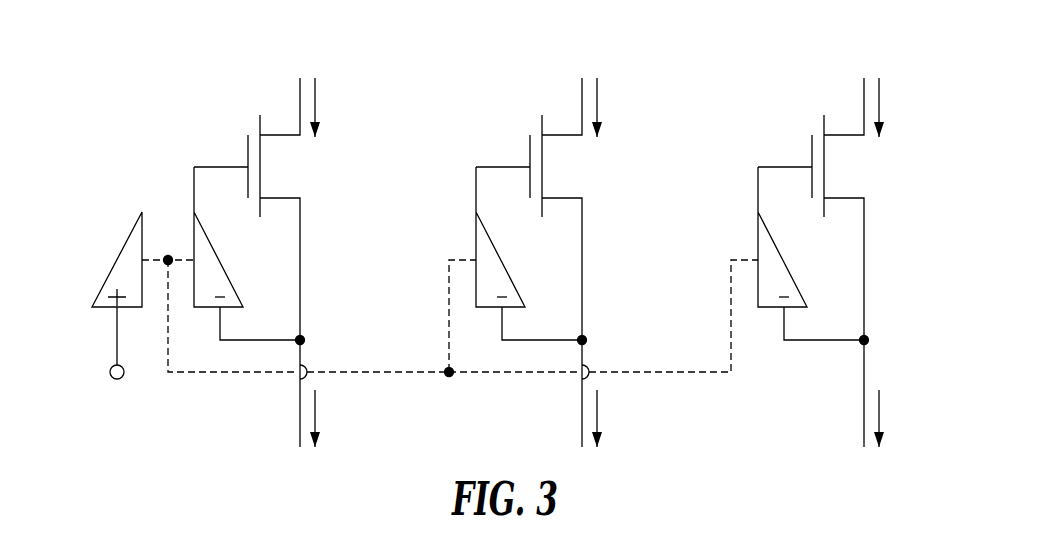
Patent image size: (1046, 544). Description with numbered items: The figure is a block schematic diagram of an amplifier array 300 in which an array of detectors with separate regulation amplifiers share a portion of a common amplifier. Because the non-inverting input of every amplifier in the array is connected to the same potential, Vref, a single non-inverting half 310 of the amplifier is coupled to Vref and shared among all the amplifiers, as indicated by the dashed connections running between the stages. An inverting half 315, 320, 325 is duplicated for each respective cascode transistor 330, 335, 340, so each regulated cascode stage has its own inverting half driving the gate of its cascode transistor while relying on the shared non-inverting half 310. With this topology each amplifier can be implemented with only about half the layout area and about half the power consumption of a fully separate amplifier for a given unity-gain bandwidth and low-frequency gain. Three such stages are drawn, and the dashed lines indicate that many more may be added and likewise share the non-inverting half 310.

The amplifier array 300 is at (841, 50).
The non-inverting half 310 is at (118, 258).
The inverting half 315 is at (218, 258).
The inverting half 320 is at (500, 258).
The inverting half 325 is at (782, 258).
The cascode transistor 330 is at (248, 155).
The cascode transistor 335 is at (530, 155).
The cascode transistor 340 is at (812, 155).